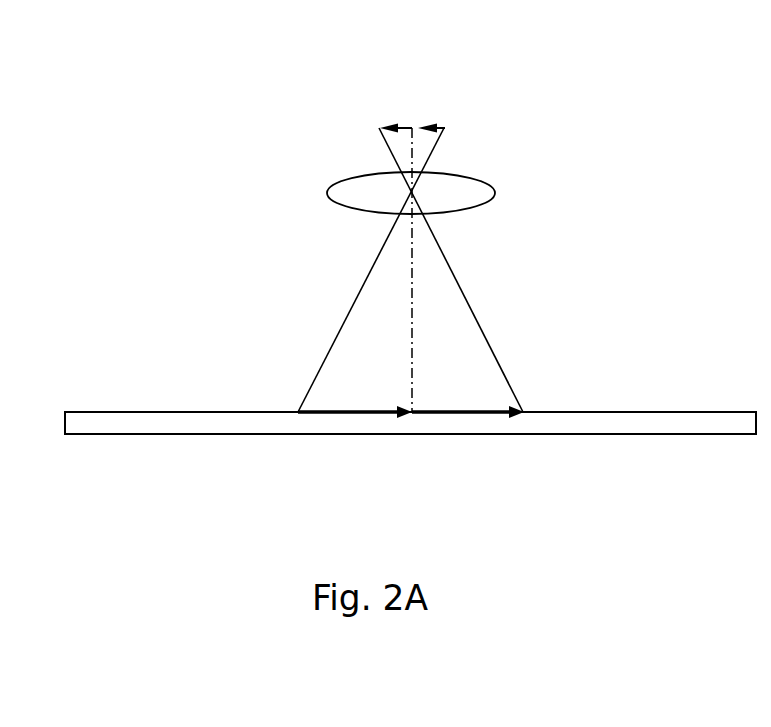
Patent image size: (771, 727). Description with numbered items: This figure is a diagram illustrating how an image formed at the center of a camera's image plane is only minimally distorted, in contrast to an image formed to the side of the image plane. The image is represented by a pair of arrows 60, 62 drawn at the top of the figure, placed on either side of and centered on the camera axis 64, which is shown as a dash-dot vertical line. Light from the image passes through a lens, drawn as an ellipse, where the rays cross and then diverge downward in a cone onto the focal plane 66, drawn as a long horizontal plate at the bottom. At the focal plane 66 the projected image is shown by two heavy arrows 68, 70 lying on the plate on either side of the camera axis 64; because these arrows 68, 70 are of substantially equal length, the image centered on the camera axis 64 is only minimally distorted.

The arrow 60 is at (401, 127).
The arrow 62 is at (432, 127).
The camera axis 64 is at (412, 312).
The focal plane 66 is at (197, 411).
The arrow 68 is at (348, 410).
The arrow 70 is at (453, 410).